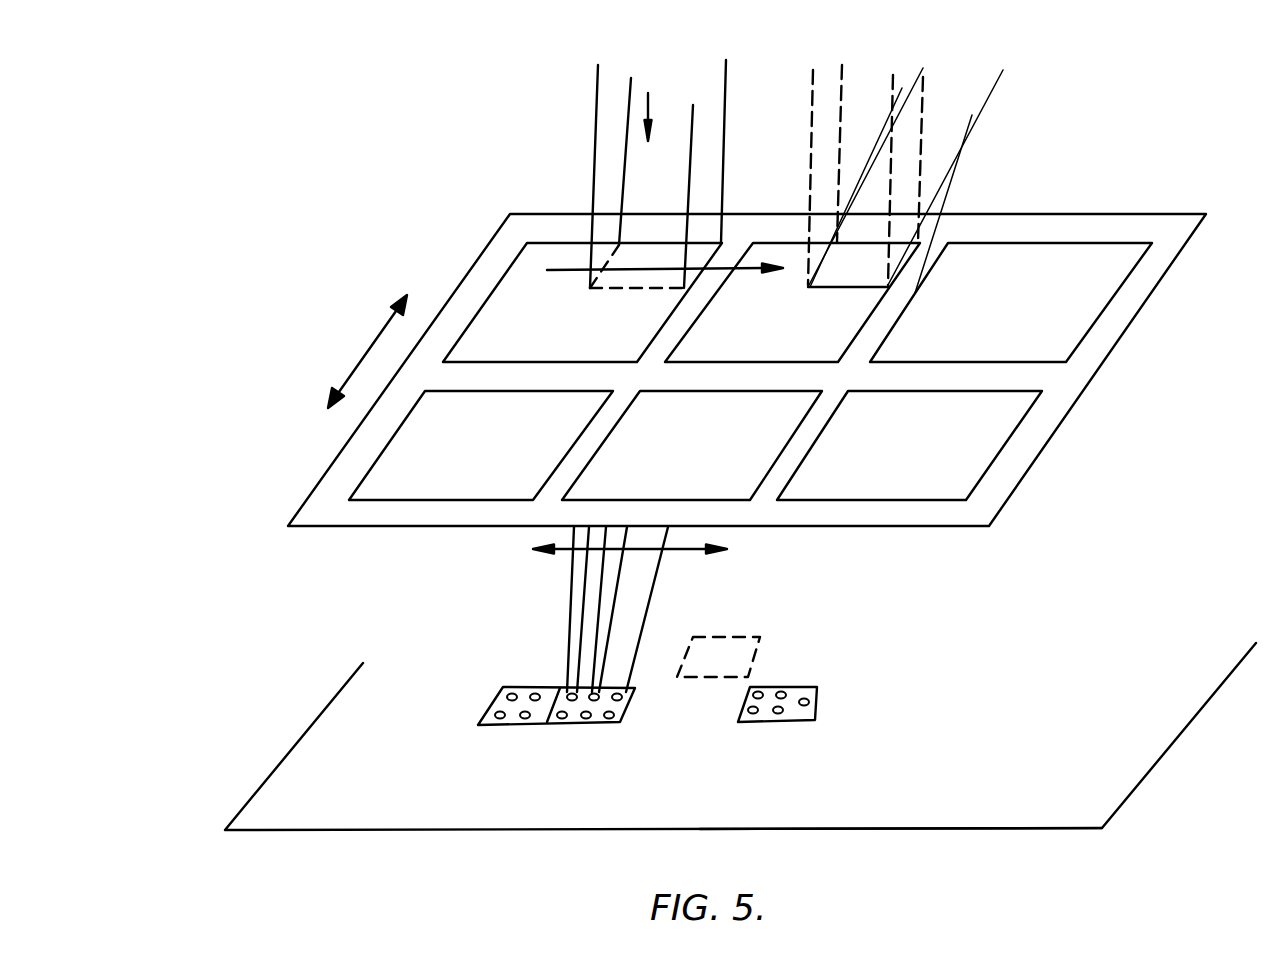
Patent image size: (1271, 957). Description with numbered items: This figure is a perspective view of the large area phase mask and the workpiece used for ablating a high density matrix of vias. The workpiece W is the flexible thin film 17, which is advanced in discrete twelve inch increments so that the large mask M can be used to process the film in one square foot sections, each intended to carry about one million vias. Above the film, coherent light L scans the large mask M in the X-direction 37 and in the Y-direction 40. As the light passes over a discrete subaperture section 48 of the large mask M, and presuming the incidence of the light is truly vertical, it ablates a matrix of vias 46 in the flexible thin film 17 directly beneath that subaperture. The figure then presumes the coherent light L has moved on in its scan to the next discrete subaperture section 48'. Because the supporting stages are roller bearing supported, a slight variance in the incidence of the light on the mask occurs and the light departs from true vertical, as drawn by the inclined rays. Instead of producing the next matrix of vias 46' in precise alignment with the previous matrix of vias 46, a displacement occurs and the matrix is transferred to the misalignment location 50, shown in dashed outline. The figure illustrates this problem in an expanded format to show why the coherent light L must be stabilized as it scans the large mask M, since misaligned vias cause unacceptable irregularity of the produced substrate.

The coherent light L is at (592, 137).
The large mask M is at (1147, 275).
The discrete subaperture section 48 is at (662, 233).
The discrete subaperture section 48' is at (914, 179).
The Y-direction 40 is at (363, 358).
The X-direction 37 is at (673, 552).
The misalignment location 50 is at (762, 645).
The matrix of vias 46 is at (565, 721).
The matrix of vias 46' is at (797, 719).
The workpiece W is at (339, 808).
The flexible thin film 17 is at (952, 829).